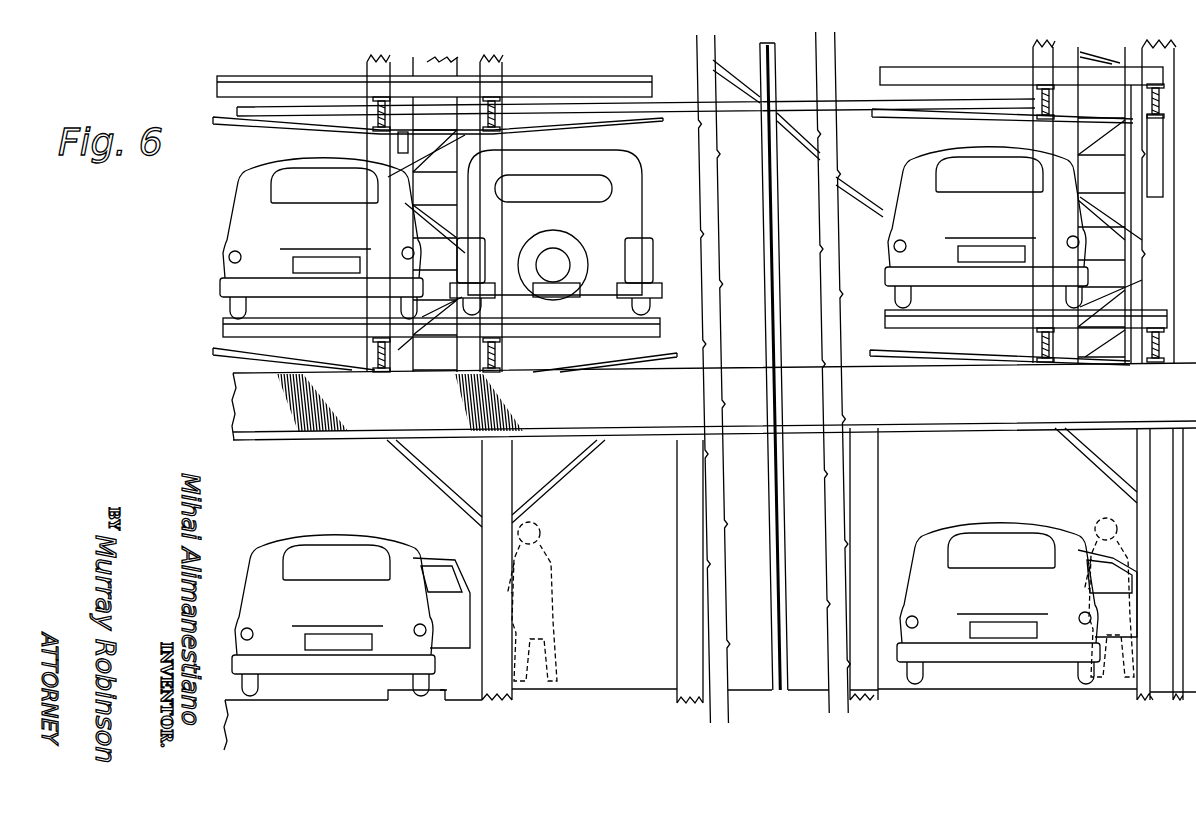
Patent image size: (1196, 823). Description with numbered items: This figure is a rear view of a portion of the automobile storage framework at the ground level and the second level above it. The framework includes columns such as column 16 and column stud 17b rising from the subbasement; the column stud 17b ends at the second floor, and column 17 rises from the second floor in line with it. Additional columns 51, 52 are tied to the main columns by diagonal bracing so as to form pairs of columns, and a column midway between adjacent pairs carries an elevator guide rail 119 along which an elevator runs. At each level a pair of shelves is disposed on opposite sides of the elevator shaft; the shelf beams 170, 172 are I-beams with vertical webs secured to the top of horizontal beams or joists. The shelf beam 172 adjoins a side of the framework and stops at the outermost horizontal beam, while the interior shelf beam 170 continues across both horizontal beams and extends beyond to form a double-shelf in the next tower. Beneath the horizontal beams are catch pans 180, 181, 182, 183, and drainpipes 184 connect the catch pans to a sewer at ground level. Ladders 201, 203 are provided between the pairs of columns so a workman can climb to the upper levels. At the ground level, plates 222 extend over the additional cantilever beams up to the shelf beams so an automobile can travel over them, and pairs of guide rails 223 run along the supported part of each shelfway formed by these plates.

The column 16 is at (1157, 440).
The column 17 is at (457, 213).
The column stud 17b is at (513, 453).
The column 51 is at (1075, 201).
The column 52 is at (367, 140).
The elevator guide rail 119 is at (759, 194).
The shelf beam 170 is at (573, 337).
The shelf beam 172 is at (880, 317).
The catch pan 180 is at (630, 125).
The catch pan 181 is at (640, 358).
The catch pan 182 is at (897, 118).
The catch pan 183 is at (893, 351).
The drainpipe 184 is at (398, 143).
The ladder 201 is at (436, 172).
The ladder 203 is at (1090, 165).
The plate 222 is at (388, 690).
The guide rail 223 is at (433, 690).